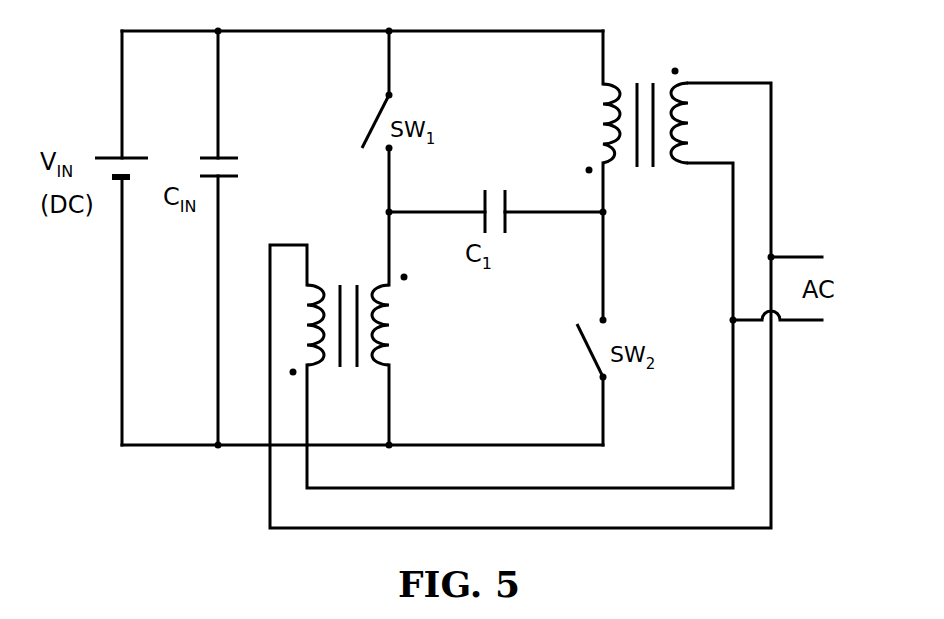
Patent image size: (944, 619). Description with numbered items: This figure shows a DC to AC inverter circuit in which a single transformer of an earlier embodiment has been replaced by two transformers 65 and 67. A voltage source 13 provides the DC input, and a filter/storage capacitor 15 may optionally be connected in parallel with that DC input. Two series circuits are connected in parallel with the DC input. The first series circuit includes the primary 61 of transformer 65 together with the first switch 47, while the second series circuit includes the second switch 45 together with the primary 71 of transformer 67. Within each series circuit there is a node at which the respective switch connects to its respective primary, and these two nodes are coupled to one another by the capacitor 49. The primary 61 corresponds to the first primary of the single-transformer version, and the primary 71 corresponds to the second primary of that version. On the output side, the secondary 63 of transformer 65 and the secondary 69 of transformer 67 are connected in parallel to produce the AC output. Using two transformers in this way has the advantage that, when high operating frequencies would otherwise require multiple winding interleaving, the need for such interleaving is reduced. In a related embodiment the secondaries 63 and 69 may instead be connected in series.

The voltage source 13 is at (132, 156).
The filter/storage capacitor 15 is at (230, 156).
The switch SW2 45 is at (590, 355).
The switch SW1 47 is at (370, 125).
The capacitor C1 49 is at (505, 200).
The primary 61 is at (388, 352).
The secondary 63 is at (318, 284).
The transformer 65 is at (367, 266).
The transformer 67 is at (660, 66).
The secondary 69 is at (688, 83).
The primary 71 is at (615, 163).